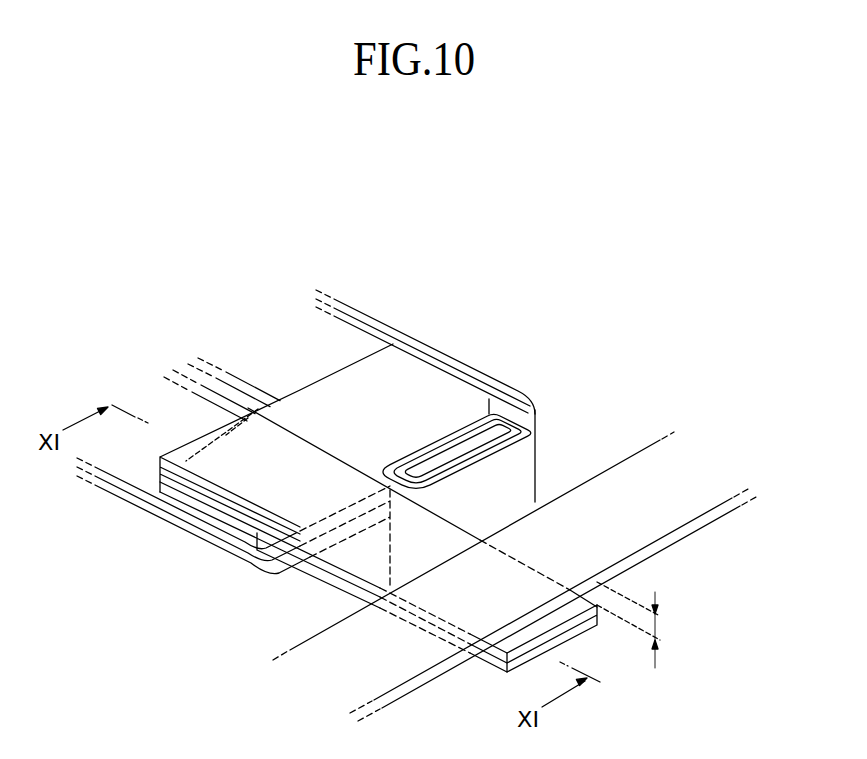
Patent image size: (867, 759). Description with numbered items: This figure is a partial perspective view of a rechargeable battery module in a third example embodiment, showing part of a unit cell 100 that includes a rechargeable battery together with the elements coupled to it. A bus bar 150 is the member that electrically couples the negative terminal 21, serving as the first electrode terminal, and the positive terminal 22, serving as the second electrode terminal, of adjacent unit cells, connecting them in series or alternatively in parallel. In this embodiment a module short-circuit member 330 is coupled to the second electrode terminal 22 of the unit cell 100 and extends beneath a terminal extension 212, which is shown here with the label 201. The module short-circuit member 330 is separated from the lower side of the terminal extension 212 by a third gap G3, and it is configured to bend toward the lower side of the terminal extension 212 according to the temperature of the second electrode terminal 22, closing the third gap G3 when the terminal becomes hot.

The unit cell 100 is at (548, 434).
The bus bar 150 is at (414, 380).
The negative terminal 21 is at (467, 425).
The positive terminal 22 is at (200, 515).
The module short-circuit member 330 is at (332, 570).
The terminal extension 212 is at (653, 520).
The bus bar 201 is at (473, 546).
The third gap G3 is at (645, 625).